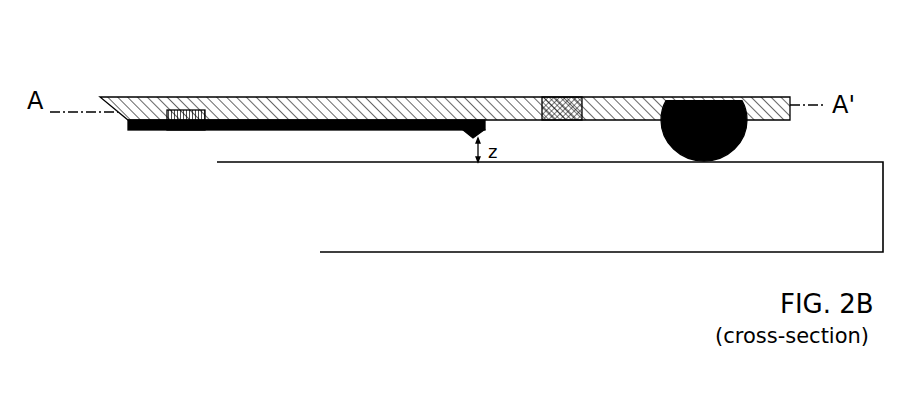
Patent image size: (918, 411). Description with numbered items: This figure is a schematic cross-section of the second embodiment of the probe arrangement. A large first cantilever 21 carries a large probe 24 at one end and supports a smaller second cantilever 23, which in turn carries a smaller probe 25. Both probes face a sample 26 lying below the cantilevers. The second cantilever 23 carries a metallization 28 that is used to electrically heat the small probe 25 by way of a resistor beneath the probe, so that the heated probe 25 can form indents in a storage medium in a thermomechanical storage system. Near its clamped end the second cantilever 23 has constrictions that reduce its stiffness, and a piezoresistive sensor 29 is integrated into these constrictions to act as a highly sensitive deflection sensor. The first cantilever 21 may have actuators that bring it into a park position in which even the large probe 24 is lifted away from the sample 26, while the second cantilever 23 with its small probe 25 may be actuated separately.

The first cantilever 21 is at (618, 96).
The second cantilever 23 is at (338, 97).
The large probe 24 is at (708, 118).
The small probe 25 is at (468, 134).
The sample 26 is at (575, 228).
The metallization 28 is at (375, 129).
The piezoresistive sensor 29 is at (183, 131).